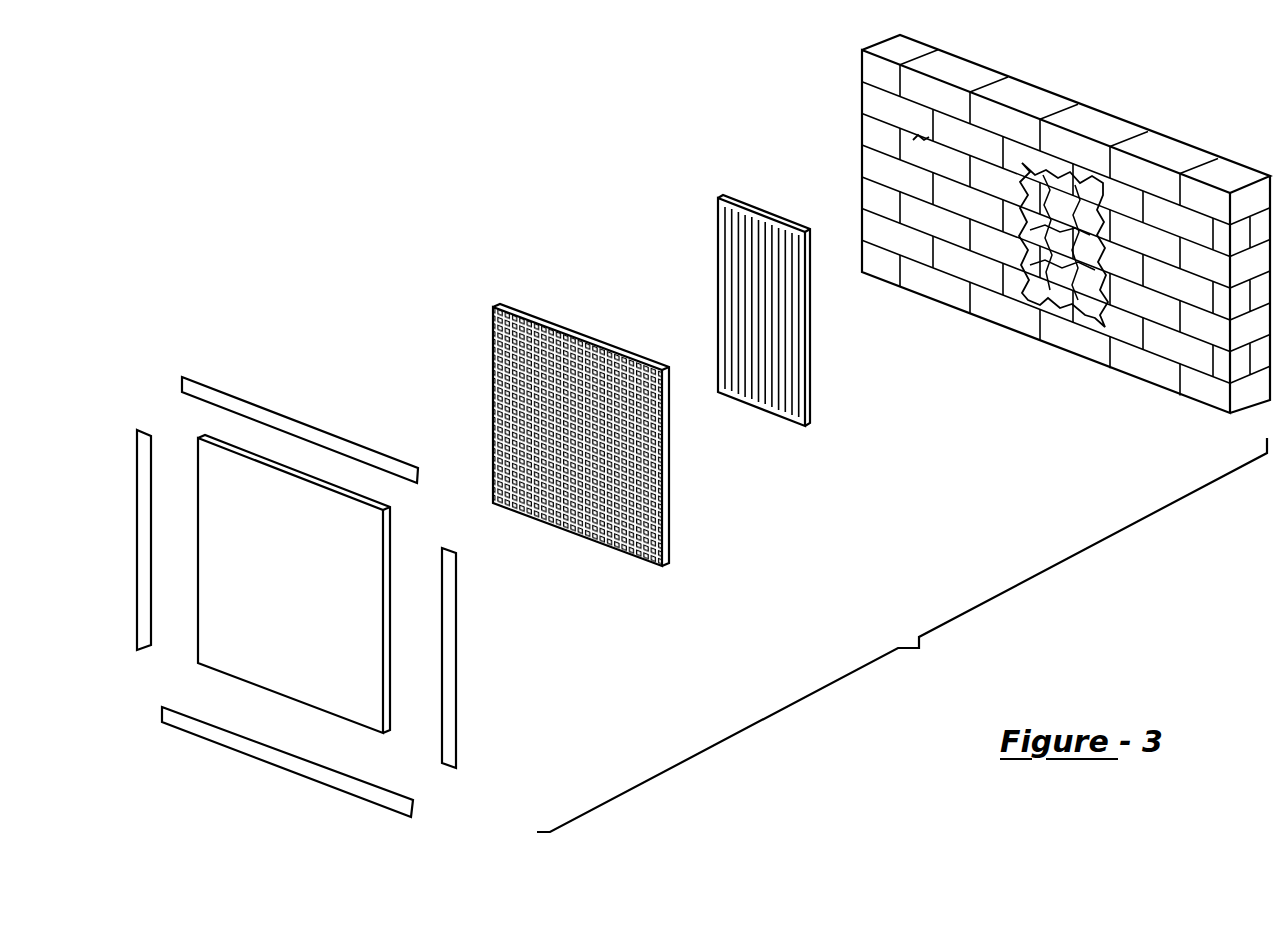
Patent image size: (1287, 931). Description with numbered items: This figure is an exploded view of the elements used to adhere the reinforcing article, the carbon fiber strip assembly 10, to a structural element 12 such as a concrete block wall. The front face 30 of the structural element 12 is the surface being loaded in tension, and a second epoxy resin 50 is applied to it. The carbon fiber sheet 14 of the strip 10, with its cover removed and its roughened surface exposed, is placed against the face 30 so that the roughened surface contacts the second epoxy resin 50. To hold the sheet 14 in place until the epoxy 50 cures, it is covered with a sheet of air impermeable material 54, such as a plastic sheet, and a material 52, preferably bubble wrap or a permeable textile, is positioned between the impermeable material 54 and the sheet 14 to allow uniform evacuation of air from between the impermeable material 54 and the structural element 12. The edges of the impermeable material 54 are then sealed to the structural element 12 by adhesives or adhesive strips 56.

The carbon fiber strip assembly 10 is at (692, 278).
The structural element 12 is at (848, 110).
The carbon fiber sheet 14 is at (772, 360).
The face 30 is at (920, 137).
The second epoxy resin 50 is at (1083, 193).
The material 52 is at (595, 403).
The sheet of air impermeable material 54 is at (328, 575).
The adhesive strips 56 is at (317, 437).